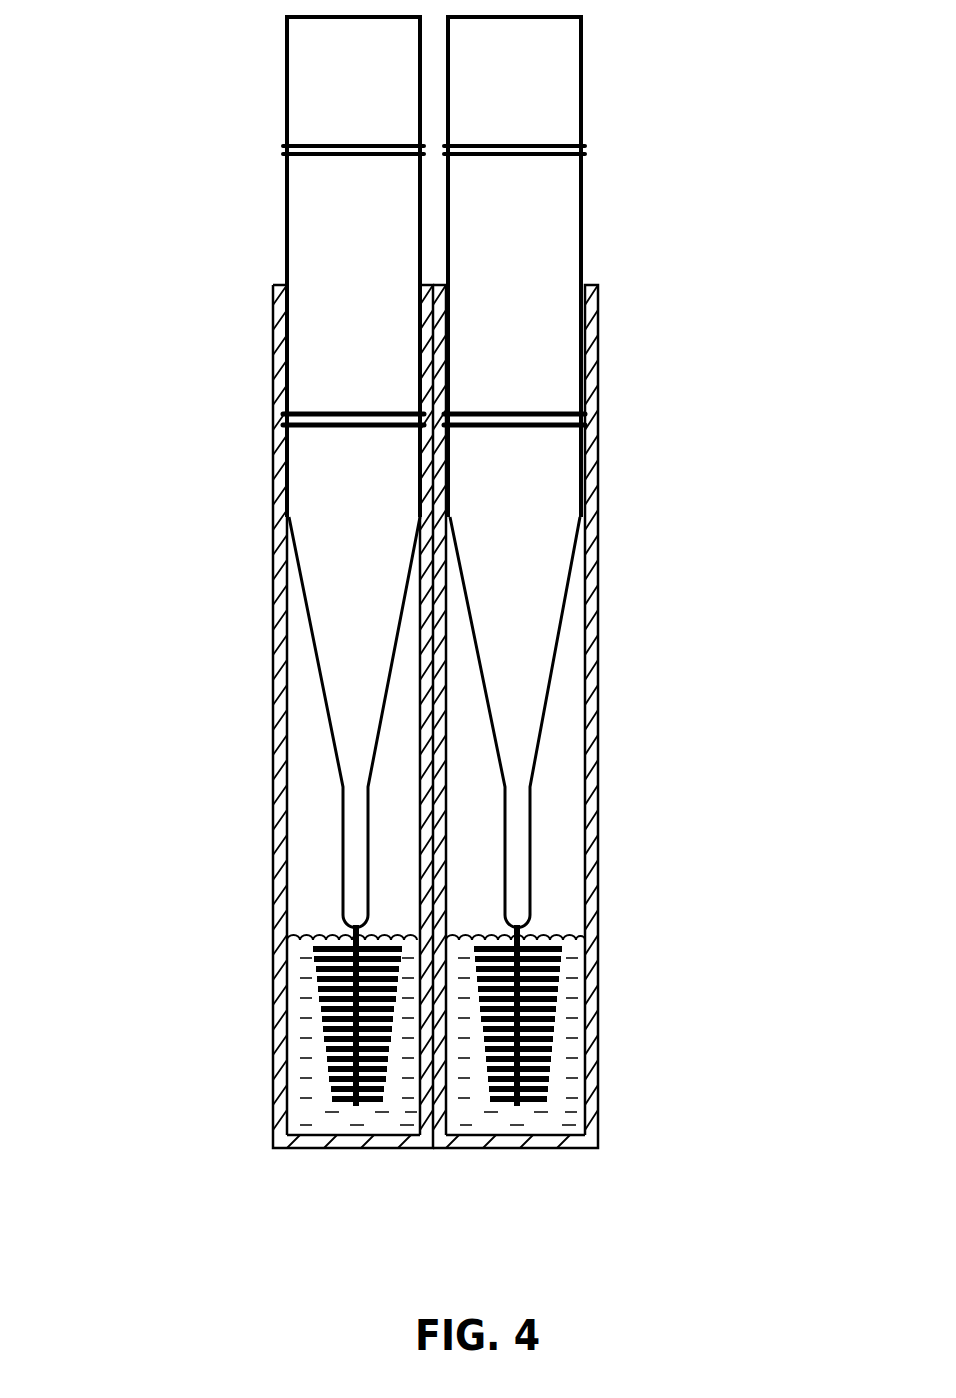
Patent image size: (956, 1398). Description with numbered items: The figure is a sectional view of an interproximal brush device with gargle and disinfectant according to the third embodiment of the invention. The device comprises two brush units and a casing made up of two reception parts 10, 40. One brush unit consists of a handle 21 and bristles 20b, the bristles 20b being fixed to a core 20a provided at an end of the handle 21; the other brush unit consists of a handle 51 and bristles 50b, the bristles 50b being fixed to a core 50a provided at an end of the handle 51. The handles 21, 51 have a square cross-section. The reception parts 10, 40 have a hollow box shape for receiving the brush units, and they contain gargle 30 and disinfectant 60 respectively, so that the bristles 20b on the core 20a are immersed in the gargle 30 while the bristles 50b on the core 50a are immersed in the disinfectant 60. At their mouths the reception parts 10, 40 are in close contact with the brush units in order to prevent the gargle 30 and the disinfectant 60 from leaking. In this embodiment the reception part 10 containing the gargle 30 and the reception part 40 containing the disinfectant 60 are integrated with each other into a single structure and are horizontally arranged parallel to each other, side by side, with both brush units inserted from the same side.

The reception part 10 is at (284, 520).
The reception part 40 is at (598, 578).
The handle 21 is at (363, 238).
The handle 51 is at (548, 247).
The core 20a is at (353, 938).
The bristles 20b is at (322, 1010).
The core 50a is at (585, 937).
The bristles 50b is at (550, 1045).
The gargle 30 is at (312, 1107).
The disinfectant 60 is at (568, 1118).